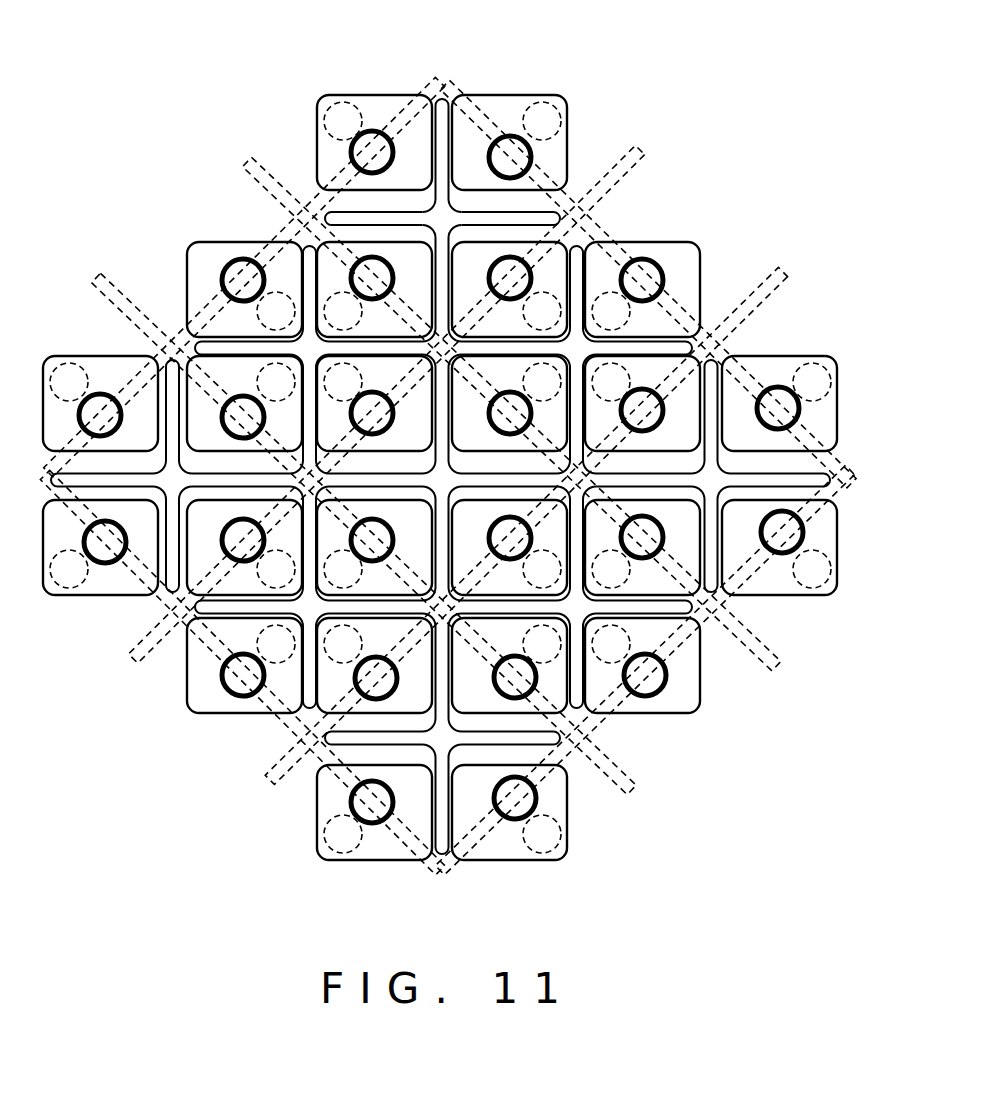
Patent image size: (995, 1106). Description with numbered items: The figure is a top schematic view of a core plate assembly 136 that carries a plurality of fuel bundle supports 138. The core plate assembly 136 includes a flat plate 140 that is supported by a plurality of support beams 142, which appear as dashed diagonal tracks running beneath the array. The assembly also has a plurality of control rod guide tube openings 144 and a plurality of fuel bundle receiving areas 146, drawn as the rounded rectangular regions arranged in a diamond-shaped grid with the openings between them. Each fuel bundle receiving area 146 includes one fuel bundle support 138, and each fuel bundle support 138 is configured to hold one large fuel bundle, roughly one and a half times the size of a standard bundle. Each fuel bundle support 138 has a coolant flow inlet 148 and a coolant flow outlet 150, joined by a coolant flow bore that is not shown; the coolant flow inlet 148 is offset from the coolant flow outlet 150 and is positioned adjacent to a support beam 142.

The core plate assembly 136 is at (703, 85).
The fuel bundle support 138 is at (702, 258).
The flat plate 140 is at (205, 210).
The support beam 142 is at (260, 168).
The control rod guide tube opening 144 is at (517, 212).
The fuel bundle receiving area 146 is at (527, 233).
The coolant flow inlet 148 is at (542, 120).
The coolant flow outlet 150 is at (513, 136).